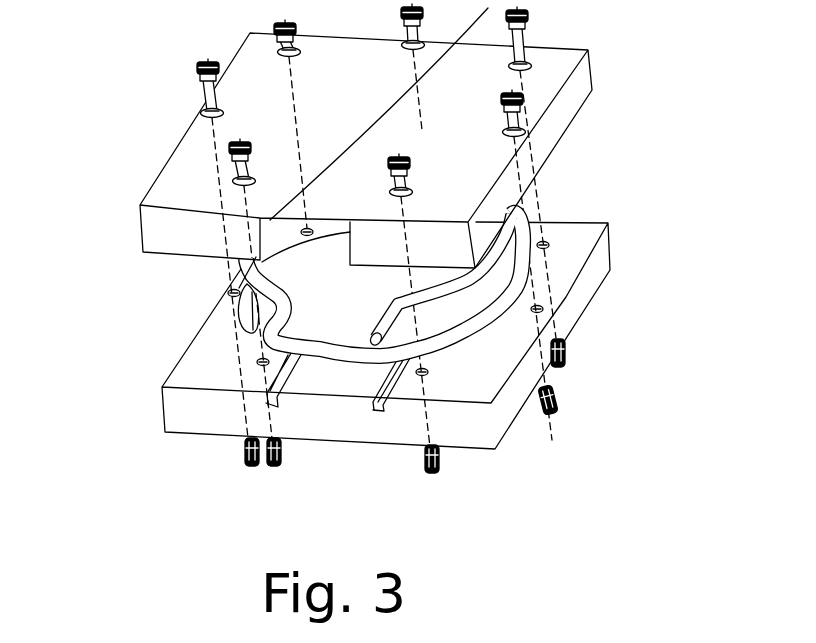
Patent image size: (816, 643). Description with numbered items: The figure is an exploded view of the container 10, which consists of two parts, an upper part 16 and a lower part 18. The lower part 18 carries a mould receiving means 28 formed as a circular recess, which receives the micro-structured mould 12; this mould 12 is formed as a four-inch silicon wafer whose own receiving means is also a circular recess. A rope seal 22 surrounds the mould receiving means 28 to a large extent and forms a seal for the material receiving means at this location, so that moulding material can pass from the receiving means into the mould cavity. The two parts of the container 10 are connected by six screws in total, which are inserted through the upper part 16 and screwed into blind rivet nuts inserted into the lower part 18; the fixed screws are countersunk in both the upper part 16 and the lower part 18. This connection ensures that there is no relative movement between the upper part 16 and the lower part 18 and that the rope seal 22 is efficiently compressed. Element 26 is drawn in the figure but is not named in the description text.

The container 10 is at (113, 46).
The micro-structured mould 12 is at (433, 332).
The upper part 16 is at (487, 218).
The lower part 18 is at (507, 392).
The rope seal 22 is at (262, 337).
The left groove channel 26 is at (268, 400).
The mould receiving means 28 is at (328, 355).